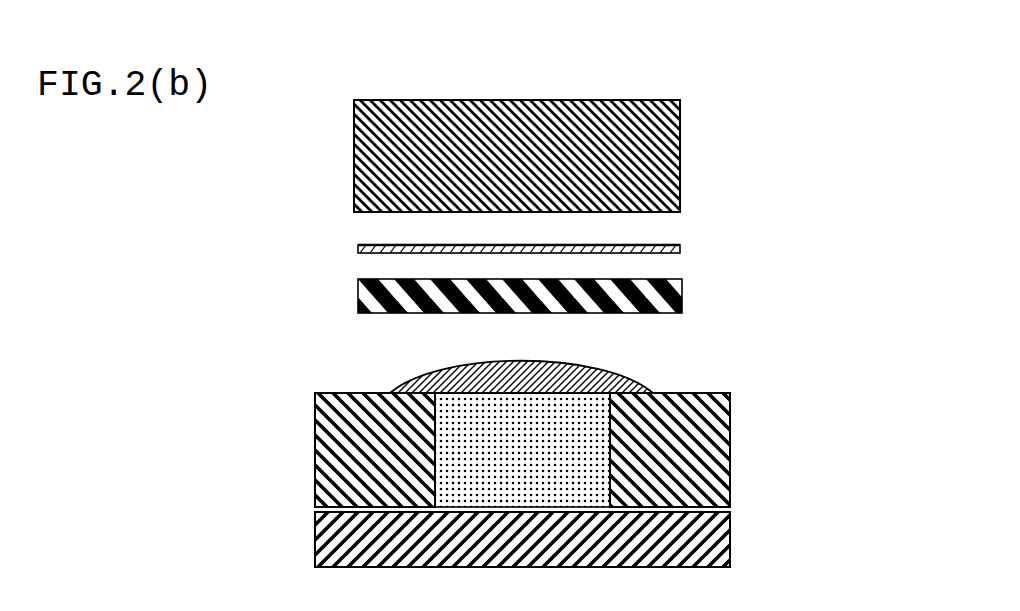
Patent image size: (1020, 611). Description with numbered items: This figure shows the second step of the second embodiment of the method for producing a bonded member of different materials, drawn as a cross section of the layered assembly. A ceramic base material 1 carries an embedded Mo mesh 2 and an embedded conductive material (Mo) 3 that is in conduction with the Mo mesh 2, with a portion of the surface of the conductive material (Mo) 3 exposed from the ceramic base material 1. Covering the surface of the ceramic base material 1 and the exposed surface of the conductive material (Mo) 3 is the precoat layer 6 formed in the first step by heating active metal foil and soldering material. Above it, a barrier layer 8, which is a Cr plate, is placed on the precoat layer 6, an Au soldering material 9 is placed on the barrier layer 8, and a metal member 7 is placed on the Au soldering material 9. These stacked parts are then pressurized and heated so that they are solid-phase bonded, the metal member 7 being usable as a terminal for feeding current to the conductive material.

The ceramic base material 1 is at (722, 422).
The Mo mesh 2 is at (318, 510).
The conductive material (Mo) 3 is at (480, 407).
The precoat layer 6 is at (647, 381).
The metal member 7 is at (662, 126).
The barrier layer 8 is at (682, 292).
The Au soldering material 9 is at (680, 248).